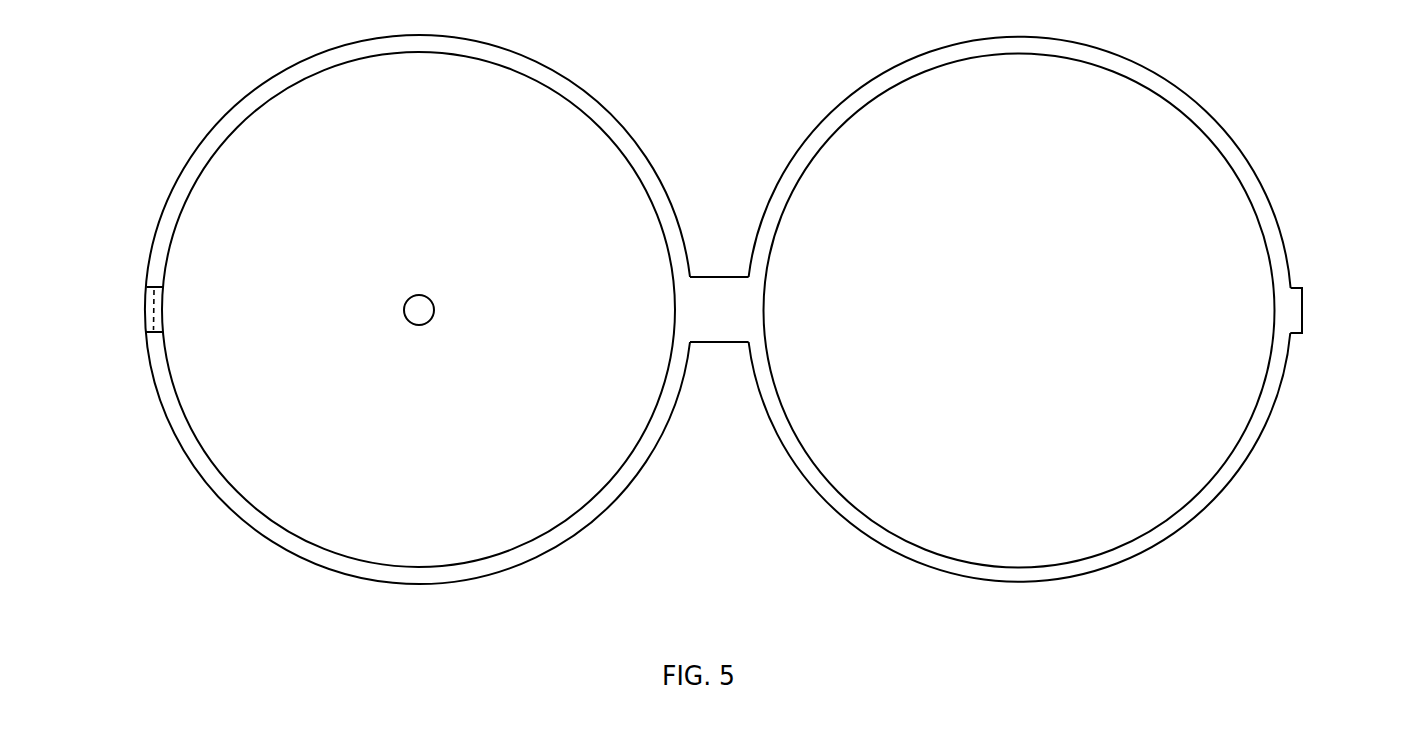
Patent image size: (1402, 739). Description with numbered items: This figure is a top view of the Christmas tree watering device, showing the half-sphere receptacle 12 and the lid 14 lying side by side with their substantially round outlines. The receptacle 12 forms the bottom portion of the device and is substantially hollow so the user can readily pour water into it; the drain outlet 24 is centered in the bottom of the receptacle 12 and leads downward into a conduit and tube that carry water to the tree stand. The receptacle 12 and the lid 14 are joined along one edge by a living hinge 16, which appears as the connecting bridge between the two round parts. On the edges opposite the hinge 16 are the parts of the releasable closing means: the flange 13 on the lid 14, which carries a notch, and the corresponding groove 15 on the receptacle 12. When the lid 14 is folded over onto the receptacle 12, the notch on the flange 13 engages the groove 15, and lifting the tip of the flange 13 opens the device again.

The receptacle 12 is at (252, 96).
The flange 13 is at (1303, 300).
The lid 14 is at (1192, 95).
The groove 15 is at (146, 311).
The living hinge 16 is at (722, 276).
The drain outlet 24 is at (419, 310).